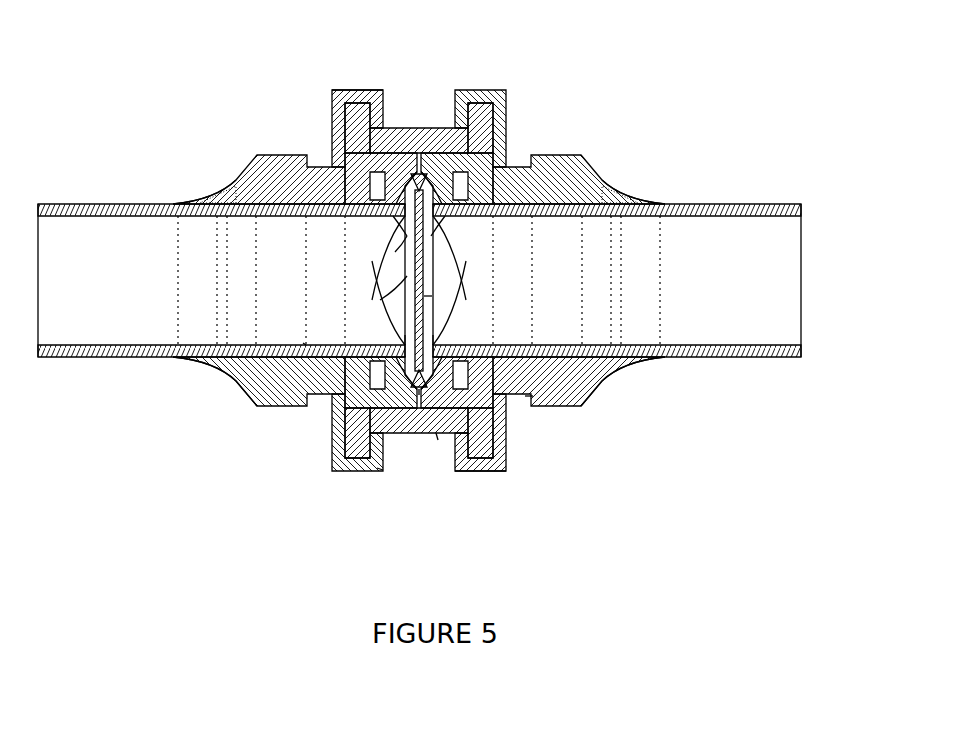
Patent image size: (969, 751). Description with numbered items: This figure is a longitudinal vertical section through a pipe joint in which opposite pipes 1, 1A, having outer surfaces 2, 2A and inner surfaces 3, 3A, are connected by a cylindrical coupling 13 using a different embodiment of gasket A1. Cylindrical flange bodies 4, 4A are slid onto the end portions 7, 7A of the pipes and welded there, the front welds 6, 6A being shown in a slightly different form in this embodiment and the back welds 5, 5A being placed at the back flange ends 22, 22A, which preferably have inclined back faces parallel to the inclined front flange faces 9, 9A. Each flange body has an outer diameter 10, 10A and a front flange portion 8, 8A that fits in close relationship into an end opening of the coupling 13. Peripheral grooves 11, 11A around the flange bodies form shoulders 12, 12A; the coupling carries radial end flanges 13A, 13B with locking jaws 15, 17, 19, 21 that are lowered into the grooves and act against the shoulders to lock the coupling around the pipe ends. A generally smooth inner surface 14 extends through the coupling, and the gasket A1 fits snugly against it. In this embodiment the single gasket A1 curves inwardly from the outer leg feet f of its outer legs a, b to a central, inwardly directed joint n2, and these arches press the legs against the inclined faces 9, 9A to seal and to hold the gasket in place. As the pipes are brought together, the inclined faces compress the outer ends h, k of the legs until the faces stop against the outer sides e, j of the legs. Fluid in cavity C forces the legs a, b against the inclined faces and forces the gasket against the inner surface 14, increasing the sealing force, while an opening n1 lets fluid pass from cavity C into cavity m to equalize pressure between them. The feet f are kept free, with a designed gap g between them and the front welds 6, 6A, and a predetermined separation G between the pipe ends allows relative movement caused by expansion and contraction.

The pipe 1 is at (55, 346).
The pipe 1A is at (783, 346).
The outer surface 2 is at (52, 204).
The outer surface 2A is at (772, 204).
The inner surface 3 is at (62, 218).
The inner surface 3A is at (778, 215).
The cylindrical flange body 4 is at (237, 387).
The cylindrical flange body 4A is at (596, 386).
The back weld 5 is at (207, 195).
The back weld 5A is at (632, 192).
The front weld 6 is at (345, 221).
The front weld 6A is at (457, 346).
The end portion 7 is at (400, 240).
The end portion 7A is at (477, 344).
The front flange portion 8 is at (392, 104).
The front flange portion 8A is at (508, 112).
The front flange face 9 is at (277, 411).
The front flange face 9A is at (525, 406).
The outer diameter 10 is at (263, 160).
The outer diameter 10A is at (560, 153).
The peripheral groove 11 is at (330, 163).
The peripheral groove 11A is at (522, 160).
The shoulder 12 is at (318, 219).
The shoulder 12A is at (493, 218).
The cylindrical coupling 13 is at (420, 434).
The radial end flange 13A is at (357, 101).
The radial end flange 13B is at (460, 470).
The inner surface 14 is at (410, 127).
The locking element 15 is at (345, 124).
The locking element 17 is at (348, 477).
The locking element 19 is at (500, 95).
The locking element 21 is at (508, 445).
The back flange end 22 is at (220, 190).
The back flange end 22A is at (600, 172).
The opening n1 is at (418, 150).
The central joint n2 is at (424, 300).
The gasket feet f is at (392, 223).
The designed gap g is at (444, 220).
The cavity C is at (391, 256).
The predetermined separation G is at (380, 300).
The outer end of gasket leg h is at (303, 344).
The gasket leg a is at (407, 338).
The gasket leg b is at (443, 350).
The gasket A1 is at (442, 293).
The outer side of gasket leg j is at (438, 441).
The cavity m is at (420, 472).
The outer side of gasket leg e is at (378, 470).
The outer end of gasket leg k is at (527, 397).